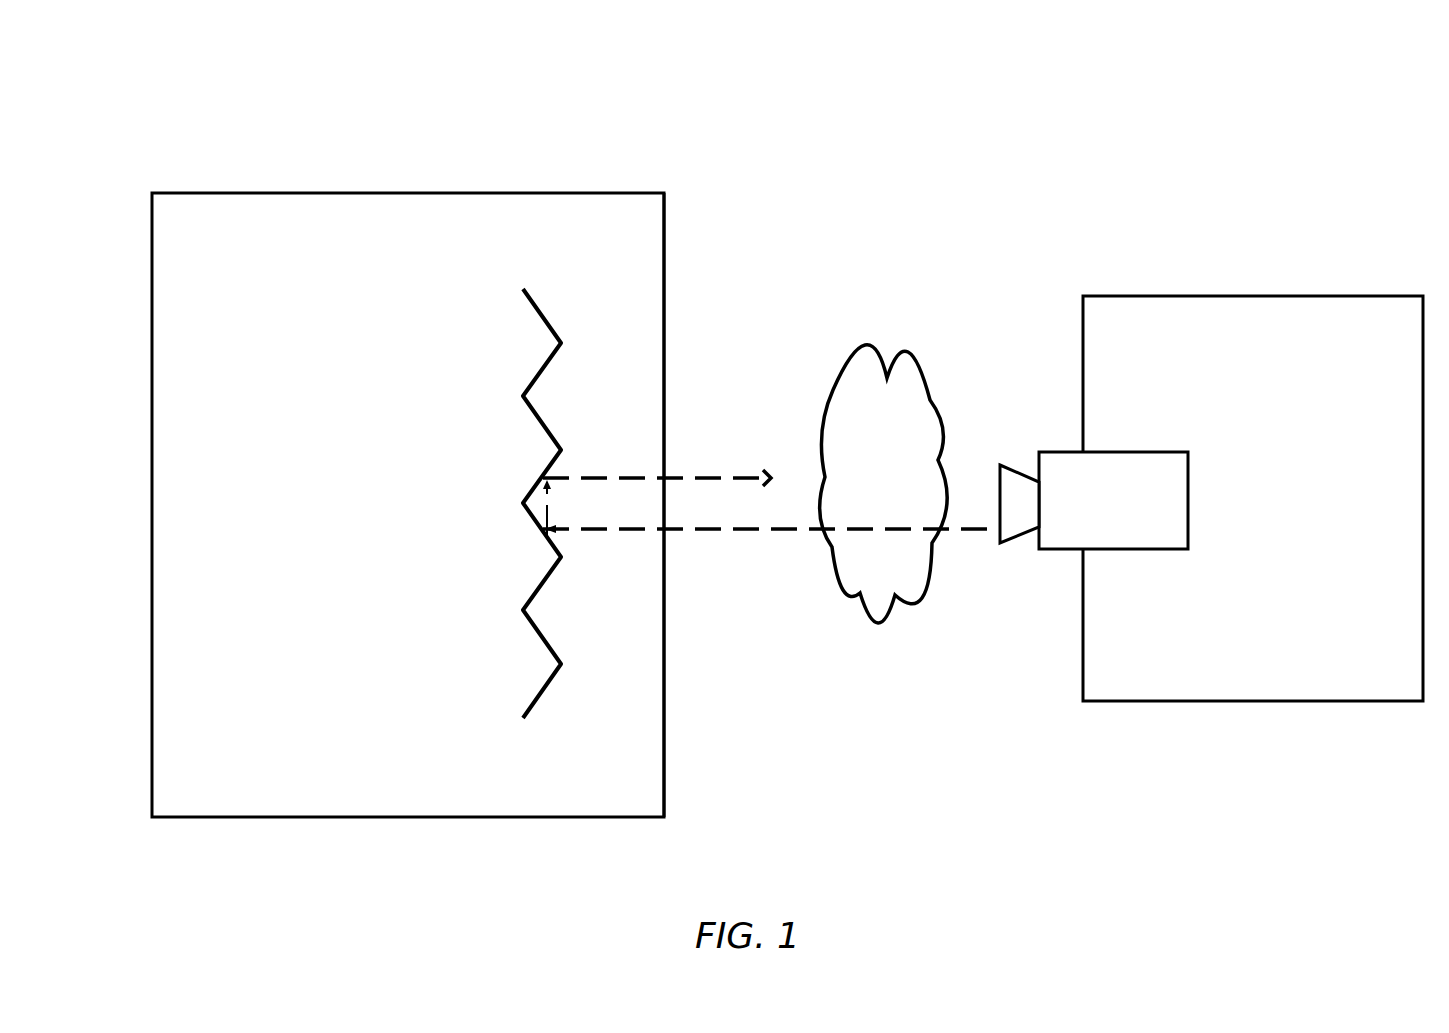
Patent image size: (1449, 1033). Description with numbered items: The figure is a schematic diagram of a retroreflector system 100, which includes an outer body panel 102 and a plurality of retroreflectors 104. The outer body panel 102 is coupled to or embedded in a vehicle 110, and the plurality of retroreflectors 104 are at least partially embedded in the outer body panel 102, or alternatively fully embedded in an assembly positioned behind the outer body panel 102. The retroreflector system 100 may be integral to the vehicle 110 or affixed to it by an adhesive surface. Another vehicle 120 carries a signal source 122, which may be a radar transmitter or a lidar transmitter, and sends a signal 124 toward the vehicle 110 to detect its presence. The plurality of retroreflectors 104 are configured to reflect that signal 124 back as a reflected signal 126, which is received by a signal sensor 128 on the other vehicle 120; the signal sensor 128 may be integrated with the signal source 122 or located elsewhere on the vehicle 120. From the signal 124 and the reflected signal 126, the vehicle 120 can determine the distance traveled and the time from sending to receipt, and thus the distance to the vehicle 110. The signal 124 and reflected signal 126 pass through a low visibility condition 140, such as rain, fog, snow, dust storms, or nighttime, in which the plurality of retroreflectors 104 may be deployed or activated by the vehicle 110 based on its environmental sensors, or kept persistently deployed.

The retroreflector system 100 is at (189, 134).
The outer body panel 102 is at (681, 306).
The plurality of retroreflectors 104 is at (557, 296).
The vehicle 110 is at (408, 505).
The vehicle 120 is at (1253, 498).
The signal source 122 is at (1180, 434).
The signal 124 is at (717, 550).
The reflected signal 126 is at (726, 456).
The signal sensor 128 is at (1043, 564).
The low visibility condition 140 is at (884, 484).